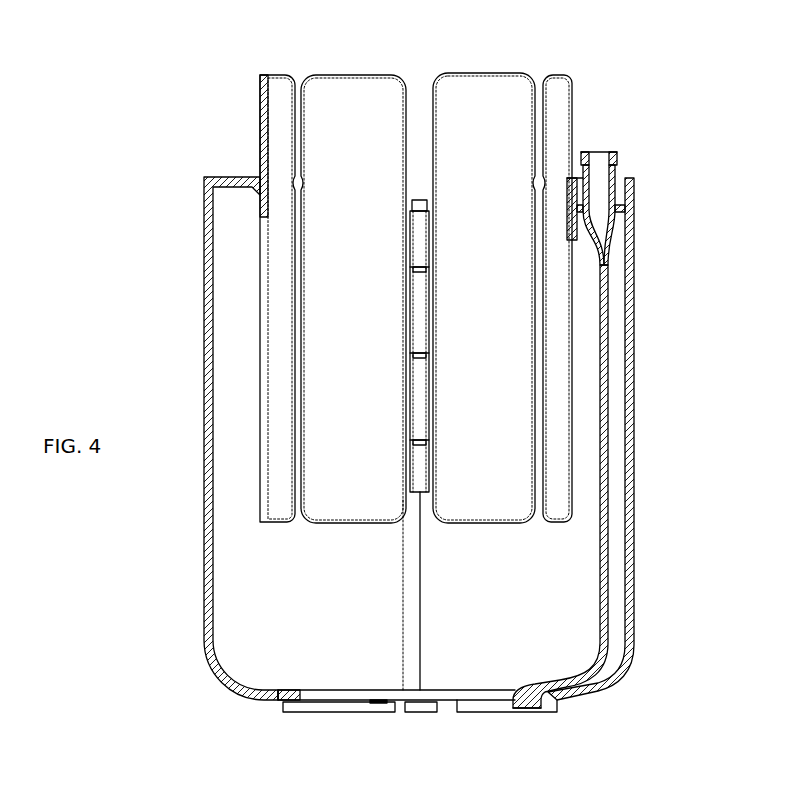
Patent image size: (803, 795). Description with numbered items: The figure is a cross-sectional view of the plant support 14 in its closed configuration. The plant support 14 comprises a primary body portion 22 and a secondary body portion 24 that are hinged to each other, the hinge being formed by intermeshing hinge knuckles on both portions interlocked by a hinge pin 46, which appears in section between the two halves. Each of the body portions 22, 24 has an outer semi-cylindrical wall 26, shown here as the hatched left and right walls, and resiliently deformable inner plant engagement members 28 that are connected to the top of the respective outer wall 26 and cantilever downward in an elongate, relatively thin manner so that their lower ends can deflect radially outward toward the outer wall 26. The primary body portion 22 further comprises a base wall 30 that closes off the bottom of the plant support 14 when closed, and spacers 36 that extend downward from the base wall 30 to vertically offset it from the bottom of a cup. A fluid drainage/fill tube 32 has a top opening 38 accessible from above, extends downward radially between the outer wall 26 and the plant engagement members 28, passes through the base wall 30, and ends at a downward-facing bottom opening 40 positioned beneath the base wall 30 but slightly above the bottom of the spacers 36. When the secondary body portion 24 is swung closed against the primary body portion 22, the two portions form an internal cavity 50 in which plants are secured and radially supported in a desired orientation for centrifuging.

The plant support 14 is at (676, 48).
The primary body portion 22 is at (470, 677).
The secondary body portion 24 is at (225, 614).
The outer semi-cylindrical wall 26 is at (205, 334).
The plant engagement members 28 is at (272, 127).
The base wall 30 is at (315, 697).
The fluid drainage/fill tube 32 is at (617, 583).
The spacers 36 is at (367, 714).
The top opening 38 is at (598, 160).
The bottom opening 40 is at (530, 706).
The hinge pin 46 is at (417, 200).
The internal cavity 50 is at (350, 264).